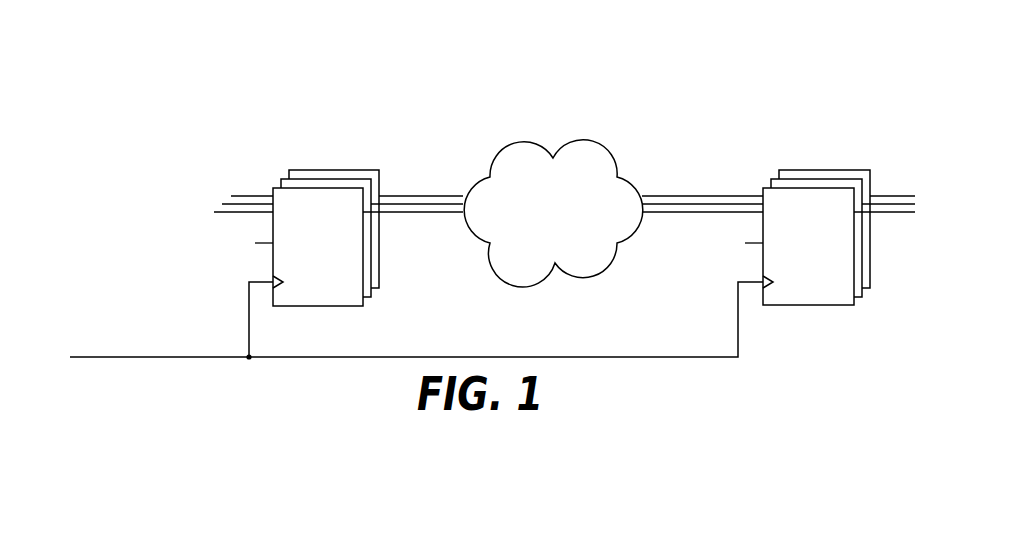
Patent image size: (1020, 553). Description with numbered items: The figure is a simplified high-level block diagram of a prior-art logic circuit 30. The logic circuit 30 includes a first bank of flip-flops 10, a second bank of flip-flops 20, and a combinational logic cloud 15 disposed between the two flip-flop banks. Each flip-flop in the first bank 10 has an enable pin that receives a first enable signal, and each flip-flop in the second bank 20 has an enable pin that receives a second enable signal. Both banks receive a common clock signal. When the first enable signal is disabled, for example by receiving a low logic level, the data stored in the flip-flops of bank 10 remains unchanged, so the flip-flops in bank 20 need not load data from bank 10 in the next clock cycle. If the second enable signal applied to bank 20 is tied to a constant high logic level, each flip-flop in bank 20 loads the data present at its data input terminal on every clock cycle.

The first bank of flip-flops 10 is at (317, 148).
The combinational logic cloud 15 is at (528, 142).
The second bank of flip-flops 20 is at (805, 148).
The logic circuit 30 is at (830, 63).